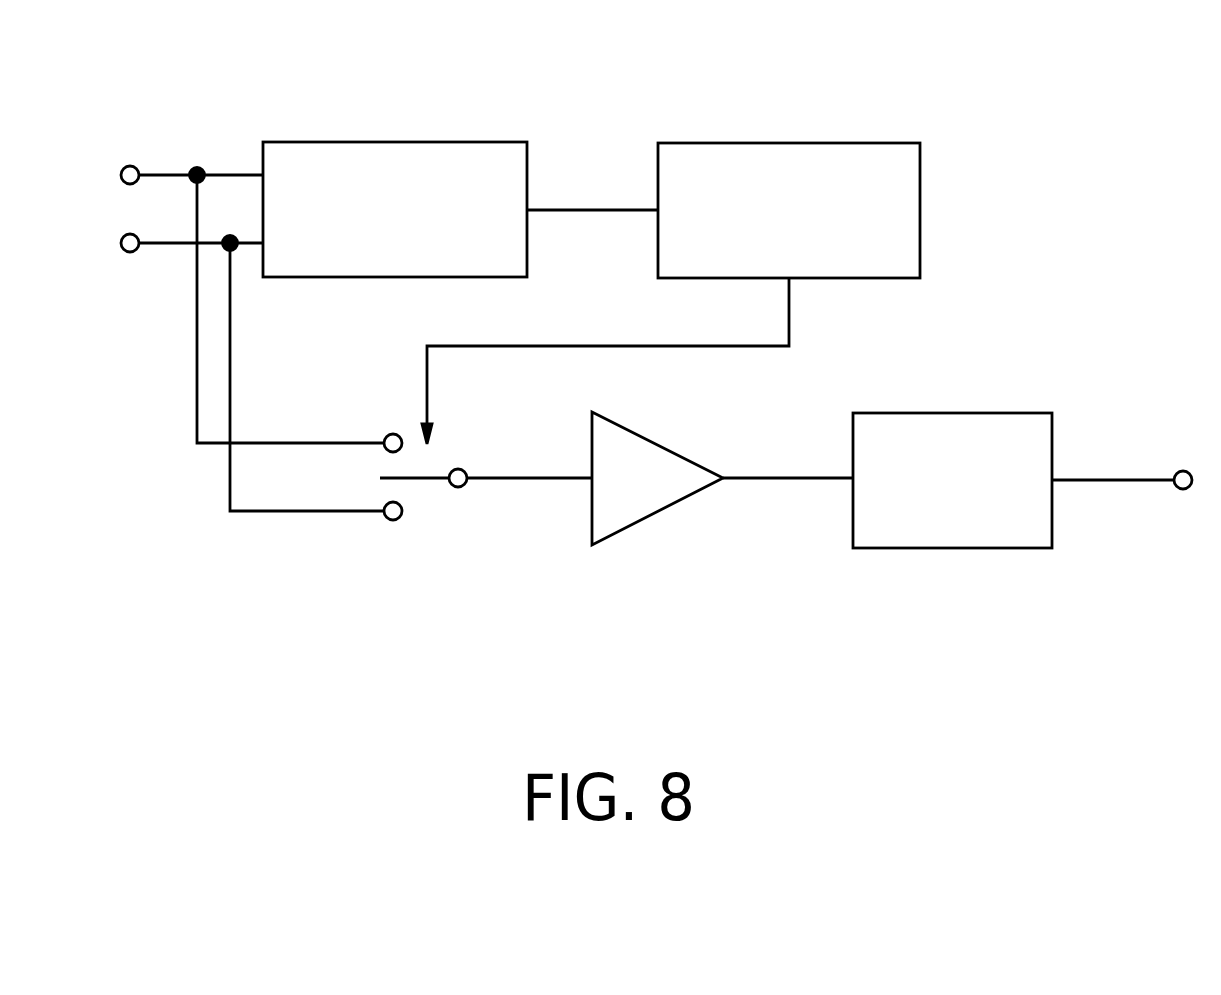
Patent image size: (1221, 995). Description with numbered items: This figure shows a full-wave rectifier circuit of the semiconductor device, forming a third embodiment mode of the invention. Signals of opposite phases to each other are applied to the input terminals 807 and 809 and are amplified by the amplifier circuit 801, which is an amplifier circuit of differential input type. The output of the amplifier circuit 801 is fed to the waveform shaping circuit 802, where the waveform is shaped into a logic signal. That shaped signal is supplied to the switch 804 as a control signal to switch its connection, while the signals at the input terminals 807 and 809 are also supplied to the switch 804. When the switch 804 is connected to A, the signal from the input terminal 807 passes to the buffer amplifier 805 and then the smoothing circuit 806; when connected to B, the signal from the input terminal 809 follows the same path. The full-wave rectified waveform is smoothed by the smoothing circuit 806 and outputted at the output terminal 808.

The amplifier circuit 801 is at (395, 209).
The waveform shaping circuit 802 is at (789, 210).
The switch 804 is at (440, 517).
The buffer amplifier 805 is at (657, 523).
The smoothing circuit 806 is at (952, 480).
The input terminal 807 is at (128, 160).
The output terminal 808 is at (1177, 505).
The input terminal 809 is at (138, 263).